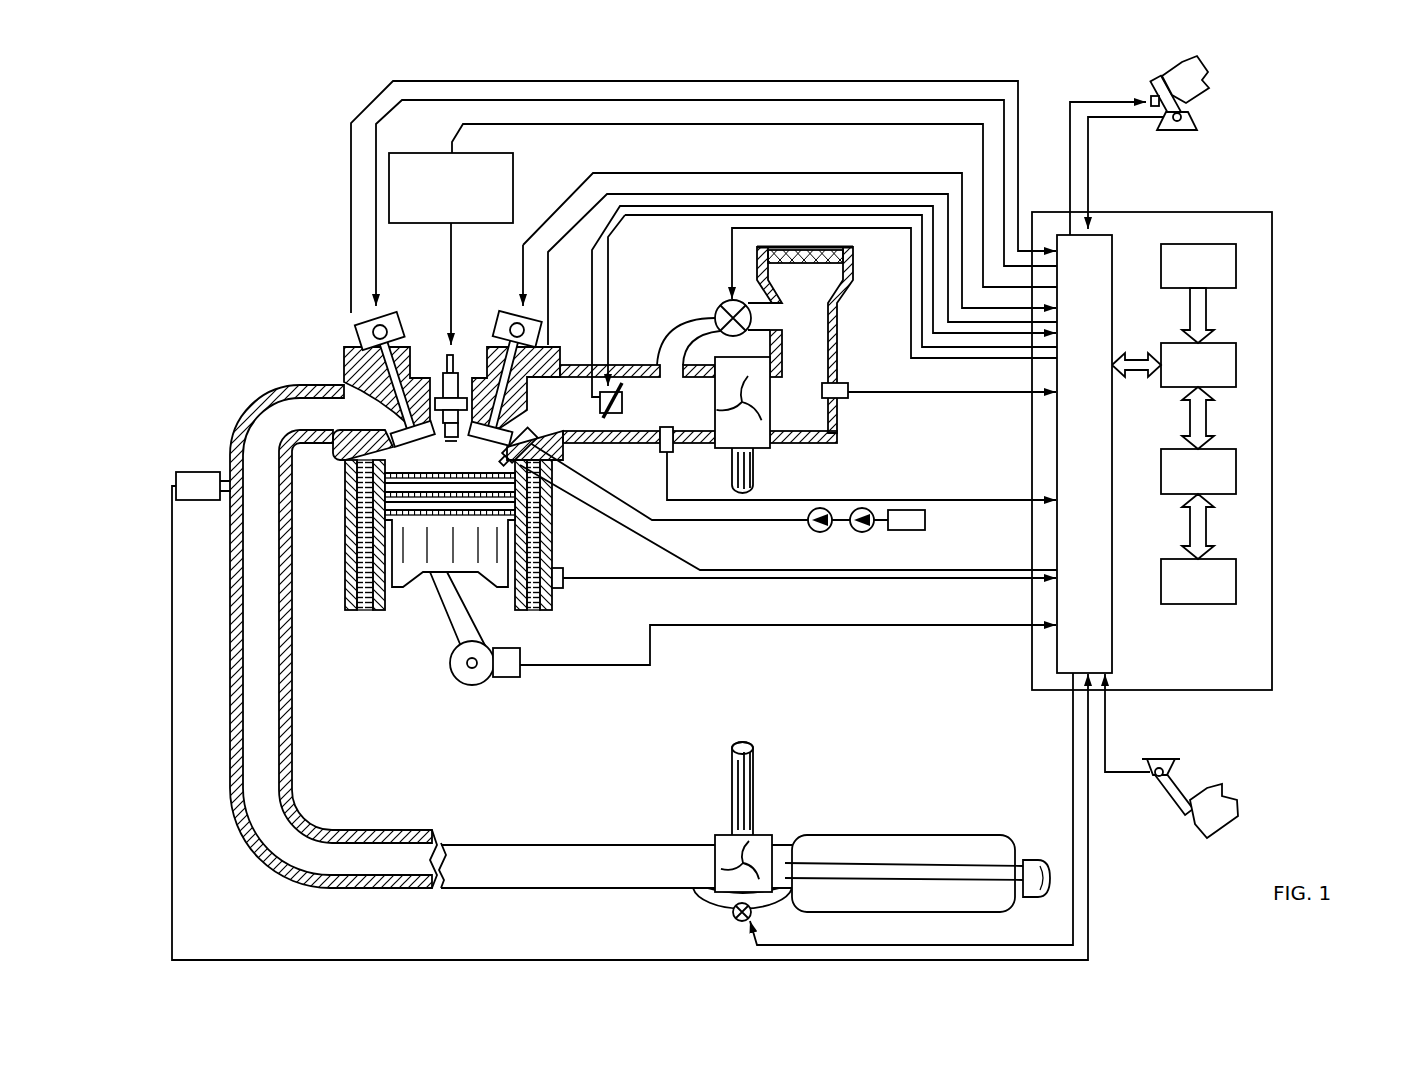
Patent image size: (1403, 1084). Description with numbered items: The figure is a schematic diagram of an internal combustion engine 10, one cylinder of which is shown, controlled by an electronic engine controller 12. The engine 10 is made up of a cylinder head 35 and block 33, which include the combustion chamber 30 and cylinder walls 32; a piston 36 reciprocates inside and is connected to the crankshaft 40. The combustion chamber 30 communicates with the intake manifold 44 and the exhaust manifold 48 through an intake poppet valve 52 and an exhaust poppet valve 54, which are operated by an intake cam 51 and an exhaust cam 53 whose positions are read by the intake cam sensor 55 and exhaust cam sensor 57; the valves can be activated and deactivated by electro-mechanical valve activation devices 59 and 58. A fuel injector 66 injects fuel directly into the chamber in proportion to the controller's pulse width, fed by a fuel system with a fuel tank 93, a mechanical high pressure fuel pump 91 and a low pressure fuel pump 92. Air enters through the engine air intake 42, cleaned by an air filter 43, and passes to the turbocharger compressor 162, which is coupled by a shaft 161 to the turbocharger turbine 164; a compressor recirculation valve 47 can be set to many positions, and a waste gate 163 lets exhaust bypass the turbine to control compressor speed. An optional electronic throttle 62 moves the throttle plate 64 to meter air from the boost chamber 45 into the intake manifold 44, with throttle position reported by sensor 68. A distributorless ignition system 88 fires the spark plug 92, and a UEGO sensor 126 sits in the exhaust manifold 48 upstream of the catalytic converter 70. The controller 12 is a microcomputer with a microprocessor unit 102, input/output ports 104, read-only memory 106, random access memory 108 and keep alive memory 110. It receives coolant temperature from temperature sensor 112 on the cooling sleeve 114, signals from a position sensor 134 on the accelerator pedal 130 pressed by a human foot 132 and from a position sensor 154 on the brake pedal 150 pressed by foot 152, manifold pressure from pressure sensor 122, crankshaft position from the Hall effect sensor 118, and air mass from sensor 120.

The internal combustion engine 10 is at (276, 296).
The electronic engine controller 12 is at (1260, 212).
The combustion chamber 30 is at (448, 450).
The cylinder walls 32 is at (390, 612).
The block 33 is at (343, 496).
The cylinder head 35 is at (342, 345).
The piston 36 is at (430, 557).
The crankshaft 40 is at (463, 683).
The engine air intake 42 is at (672, 264).
The air filter 43 is at (823, 267).
The intake manifold 44 is at (584, 418).
The boost chamber 45 is at (689, 418).
The compressor recirculation valve 47 is at (725, 303).
The exhaust manifold 48 is at (322, 425).
The intake cam 51 is at (505, 307).
The intake poppet valve 52 is at (497, 412).
The exhaust cam 53 is at (377, 307).
The exhaust poppet valve 54 is at (365, 395).
The intake cam sensor 55 is at (538, 337).
The exhaust cam sensor 57 is at (362, 328).
The valve activation device 58 is at (388, 331).
The valve activation device 59 is at (513, 337).
The electronic throttle 62 is at (622, 402).
The throttle plate 64 is at (612, 420).
The fuel injector 66 is at (543, 478).
The throttle position sensor 68 is at (577, 357).
The catalytic converter 70 is at (833, 835).
The distributorless ignition system 88 is at (405, 153).
The mechanical high pressure fuel pump 91 is at (813, 532).
The spark plug / low pressure fuel pump 92 is at (462, 372).
The fuel tank 93 is at (917, 532).
The microprocessor unit 102 is at (1237, 358).
The input/output ports 104 is at (1113, 243).
The read-only memory 106 is at (1237, 263).
The random access memory 108 is at (1237, 472).
The keep alive memory 110 is at (1237, 580).
The temperature sensor 112 is at (563, 583).
The cooling sleeve 114 is at (542, 595).
The Hall effect sensor 118 is at (520, 650).
The air mass sensor 120 is at (840, 383).
The pressure sensor 122 is at (660, 452).
The Universal Exhaust Gas Oxygen sensor 126 is at (179, 472).
The accelerator pedal 130 is at (1150, 100).
The human foot 132 is at (1210, 78).
The position sensor 134 is at (1195, 120).
The brake pedal 150 is at (1187, 815).
The foot 152 is at (1225, 792).
The position sensor 154 is at (1150, 770).
The shaft 161 is at (732, 467).
The turbocharger compressor 162 is at (755, 430).
The waste gate 163 is at (735, 922).
The turbocharger turbine 164 is at (722, 835).